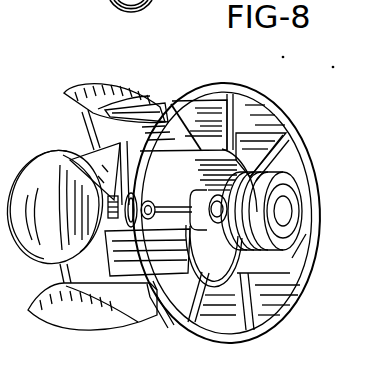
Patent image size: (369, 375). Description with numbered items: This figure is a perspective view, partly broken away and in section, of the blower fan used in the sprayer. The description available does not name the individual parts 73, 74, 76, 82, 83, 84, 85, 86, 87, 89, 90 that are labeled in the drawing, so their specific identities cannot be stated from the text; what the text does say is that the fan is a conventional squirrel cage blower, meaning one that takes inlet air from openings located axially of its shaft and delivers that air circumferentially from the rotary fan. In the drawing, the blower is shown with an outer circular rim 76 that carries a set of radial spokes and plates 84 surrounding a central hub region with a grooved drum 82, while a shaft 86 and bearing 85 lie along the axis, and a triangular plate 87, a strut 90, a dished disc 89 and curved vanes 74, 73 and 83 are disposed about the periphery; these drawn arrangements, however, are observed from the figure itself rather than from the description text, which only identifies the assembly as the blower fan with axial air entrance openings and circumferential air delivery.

The blade 73 is at (150, 114).
The fin 74 is at (92, 90).
The ring 76 is at (258, 103).
The hub drum 82 is at (205, 245).
The lower fin 83 is at (172, 320).
The plates 84 is at (184, 123).
The bearing 85 is at (150, 189).
The shaft 86 is at (167, 202).
The triangular plate 87 is at (100, 160).
The disc 89 is at (35, 177).
The strut 90 is at (82, 132).